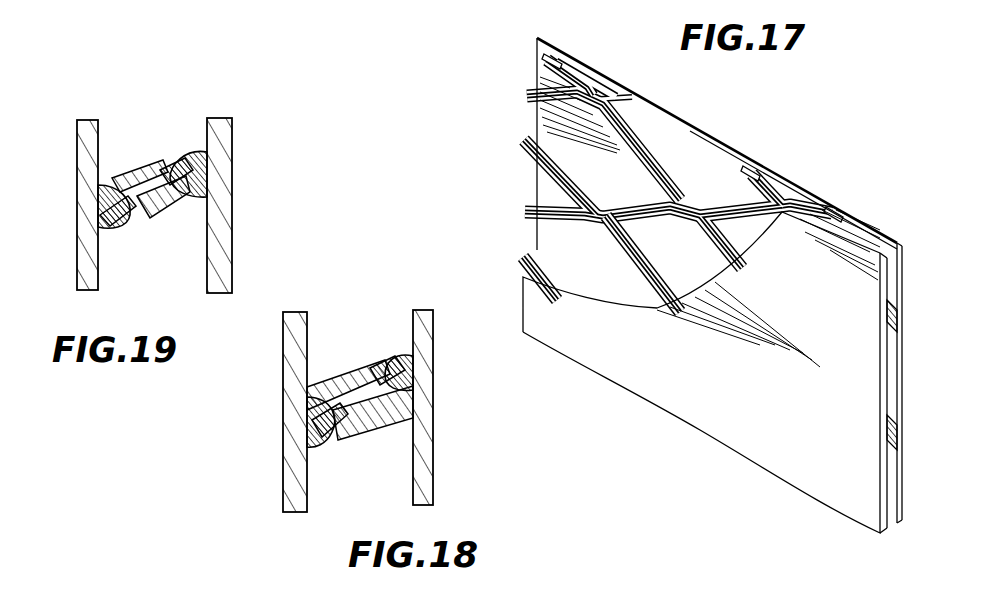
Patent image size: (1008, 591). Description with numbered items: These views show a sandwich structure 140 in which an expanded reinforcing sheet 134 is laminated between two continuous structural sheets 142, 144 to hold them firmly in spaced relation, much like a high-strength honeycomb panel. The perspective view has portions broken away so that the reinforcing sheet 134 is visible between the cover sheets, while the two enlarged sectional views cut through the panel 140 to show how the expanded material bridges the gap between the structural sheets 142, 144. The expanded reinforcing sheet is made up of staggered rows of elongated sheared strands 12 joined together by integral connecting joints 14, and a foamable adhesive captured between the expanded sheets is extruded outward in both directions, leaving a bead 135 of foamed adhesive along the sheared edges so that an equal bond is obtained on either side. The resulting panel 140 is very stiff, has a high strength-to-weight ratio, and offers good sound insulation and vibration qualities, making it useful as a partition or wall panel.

In FIG. 19, the sheared strands 12 is at (143, 160).
In FIG. 18, the connecting joints 14 is at (348, 311).
In FIG. 17, the expanded reinforcing sheet 134 is at (523, 158).
In FIG. 19, the expanded reinforcing sheet 134 is at (152, 177).
In FIG. 18, the expanded reinforcing sheet 134 is at (360, 387).
In FIG. 17, the bead of foamed adhesive 135 is at (612, 248).
In FIG. 17, the sandwich structure 140 is at (842, 203).
In FIG. 17, the continuous structural sheet 142 is at (708, 156).
In FIG. 19, the continuous structural sheet 142 is at (230, 122).
In FIG. 18, the continuous structural sheet 142 is at (432, 412).
In FIG. 17, the continuous structural sheet 144 is at (535, 303).
In FIG. 19, the continuous structural sheet 144 is at (76, 121).
In FIG. 18, the continuous structural sheet 144 is at (290, 417).